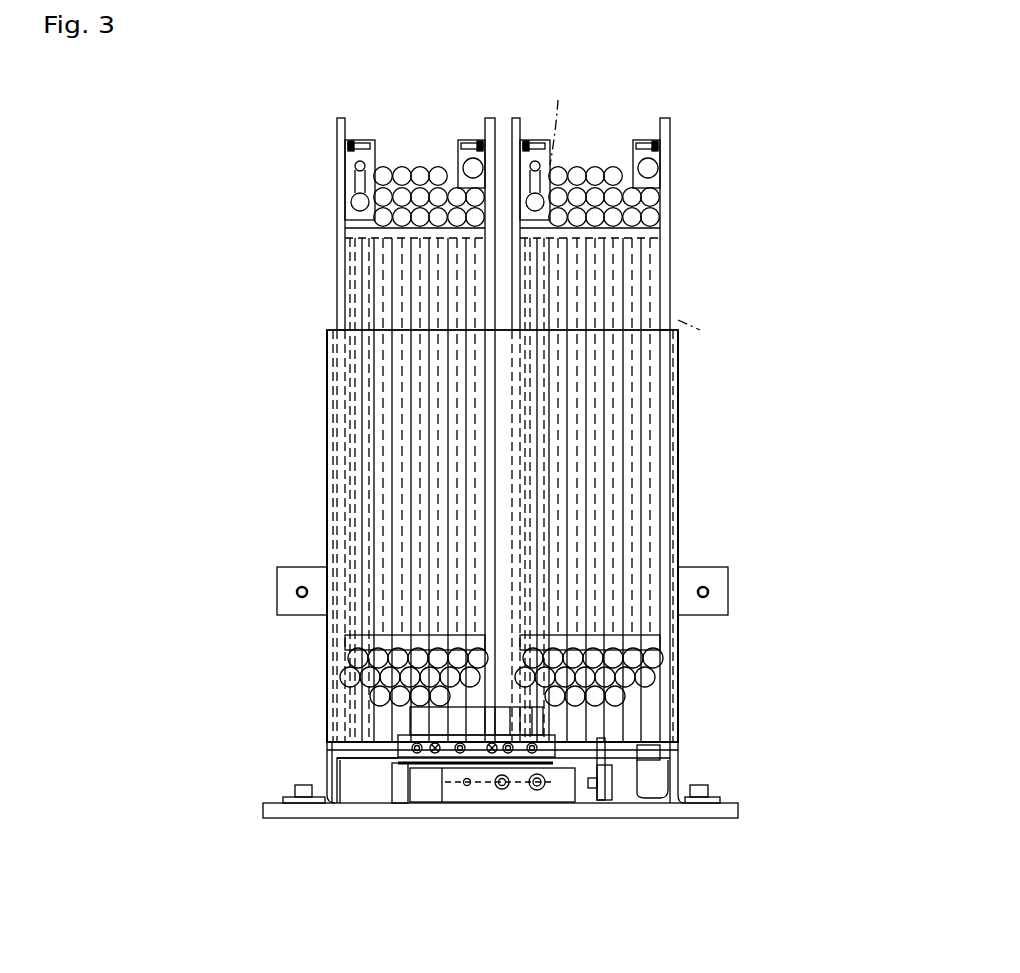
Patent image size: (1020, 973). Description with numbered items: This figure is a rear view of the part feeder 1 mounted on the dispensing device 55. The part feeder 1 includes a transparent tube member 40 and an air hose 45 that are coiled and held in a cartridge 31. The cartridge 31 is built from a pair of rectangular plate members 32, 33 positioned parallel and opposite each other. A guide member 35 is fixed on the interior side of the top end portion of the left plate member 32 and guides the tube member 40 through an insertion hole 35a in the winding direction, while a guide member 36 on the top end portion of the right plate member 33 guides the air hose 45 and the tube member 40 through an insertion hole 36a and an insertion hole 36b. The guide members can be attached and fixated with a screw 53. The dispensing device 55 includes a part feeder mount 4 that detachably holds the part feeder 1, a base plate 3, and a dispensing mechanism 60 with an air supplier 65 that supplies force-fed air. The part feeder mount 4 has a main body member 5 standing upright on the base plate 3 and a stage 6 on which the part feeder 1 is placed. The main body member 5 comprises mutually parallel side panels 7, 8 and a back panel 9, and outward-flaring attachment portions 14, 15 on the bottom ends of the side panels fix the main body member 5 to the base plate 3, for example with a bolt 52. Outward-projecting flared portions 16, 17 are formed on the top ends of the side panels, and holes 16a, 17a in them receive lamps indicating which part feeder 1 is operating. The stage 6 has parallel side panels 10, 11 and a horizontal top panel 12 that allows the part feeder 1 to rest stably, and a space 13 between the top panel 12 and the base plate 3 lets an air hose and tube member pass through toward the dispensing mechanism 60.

The part feeder 1 is at (262, 227).
The base plate 3 is at (590, 802).
The part feeder mount 4 is at (762, 528).
The main body member 5 is at (684, 414).
The stage 6 is at (355, 765).
The side panel 7 is at (684, 462).
The side panel 8 is at (327, 494).
The back panel 9 is at (360, 722).
The side panel 10 is at (673, 776).
The side panel 11 is at (345, 776).
The top panel 12 is at (378, 758).
The space 13 is at (386, 792).
The attachment portion 14 is at (704, 820).
The attachment portion 15 is at (300, 820).
The flared portion 16 is at (743, 608).
The hole 16a is at (706, 597).
The flared portion 17 is at (261, 608).
The hole 17a is at (300, 597).
The cartridge 31 is at (502, 430).
The plate member 32 is at (490, 302).
The plate member 33 is at (337, 270).
The guide member 35 is at (614, 123).
The insertion hole 35a is at (674, 150).
The guide member 36 is at (392, 139).
The insertion hole 36a is at (355, 150).
The insertion hole 36b is at (355, 203).
The tube member 40 is at (700, 330).
The air hose 45 is at (560, 100).
The bolt 52 is at (296, 792).
The screw 53 is at (347, 146).
The dispensing device 55 is at (141, 491).
The dispensing mechanism 60 is at (510, 833).
The air supplier 65 is at (620, 762).